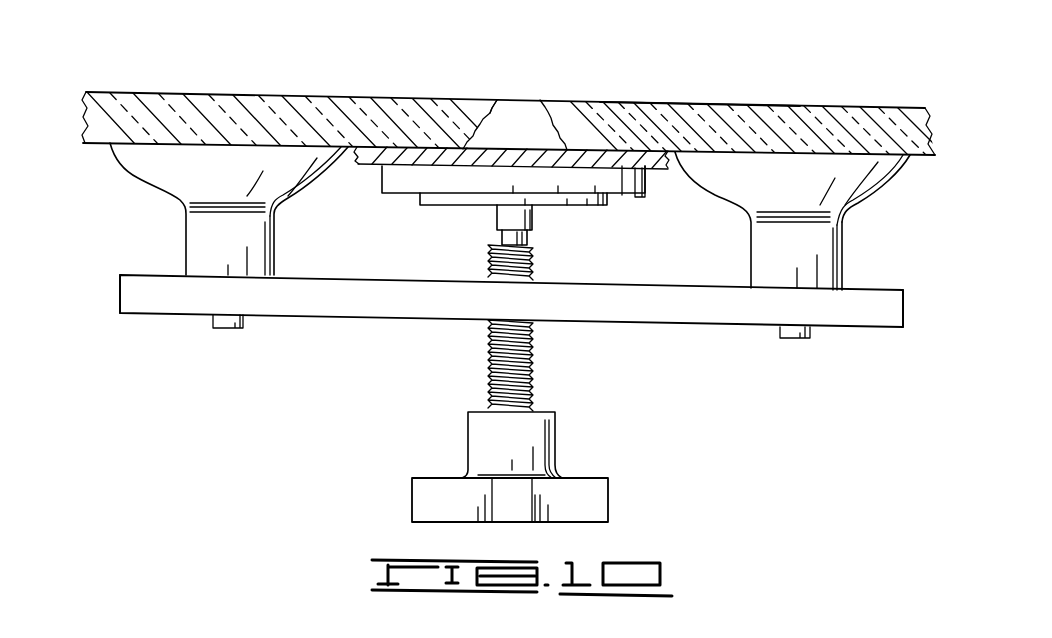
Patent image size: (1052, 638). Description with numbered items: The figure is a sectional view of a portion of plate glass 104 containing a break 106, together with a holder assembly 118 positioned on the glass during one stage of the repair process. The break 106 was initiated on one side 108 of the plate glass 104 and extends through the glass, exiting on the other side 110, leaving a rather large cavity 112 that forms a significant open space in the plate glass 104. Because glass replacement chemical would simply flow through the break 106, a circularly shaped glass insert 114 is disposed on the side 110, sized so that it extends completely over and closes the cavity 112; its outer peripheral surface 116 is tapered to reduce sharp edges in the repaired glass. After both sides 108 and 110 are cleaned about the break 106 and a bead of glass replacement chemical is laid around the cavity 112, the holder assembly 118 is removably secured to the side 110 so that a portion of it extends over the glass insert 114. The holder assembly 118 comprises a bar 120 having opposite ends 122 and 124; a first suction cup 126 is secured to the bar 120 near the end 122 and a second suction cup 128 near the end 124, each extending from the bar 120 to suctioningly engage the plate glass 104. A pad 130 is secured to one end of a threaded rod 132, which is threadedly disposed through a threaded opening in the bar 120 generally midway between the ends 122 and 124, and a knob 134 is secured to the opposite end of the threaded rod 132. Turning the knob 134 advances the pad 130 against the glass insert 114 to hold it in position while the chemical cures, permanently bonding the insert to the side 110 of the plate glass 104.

The plate glass 104 is at (800, 103).
The break 106 is at (496, 99).
The side of the plate glass 108 is at (685, 102).
The other side of the plate glass 110 is at (912, 155).
The cavity 112 is at (496, 99).
The glass insert 114 is at (623, 168).
The outer peripheral surface 116 is at (357, 152).
The holder assembly 118 is at (470, 363).
The bar 120 is at (678, 315).
The end of the bar 122 is at (905, 312).
The end of the bar 124 is at (119, 308).
The first suction cup 126 is at (834, 242).
The second suction cup 128 is at (205, 242).
The pad 130 is at (433, 180).
The threaded rod 132 is at (534, 376).
The knob 134 is at (608, 485).